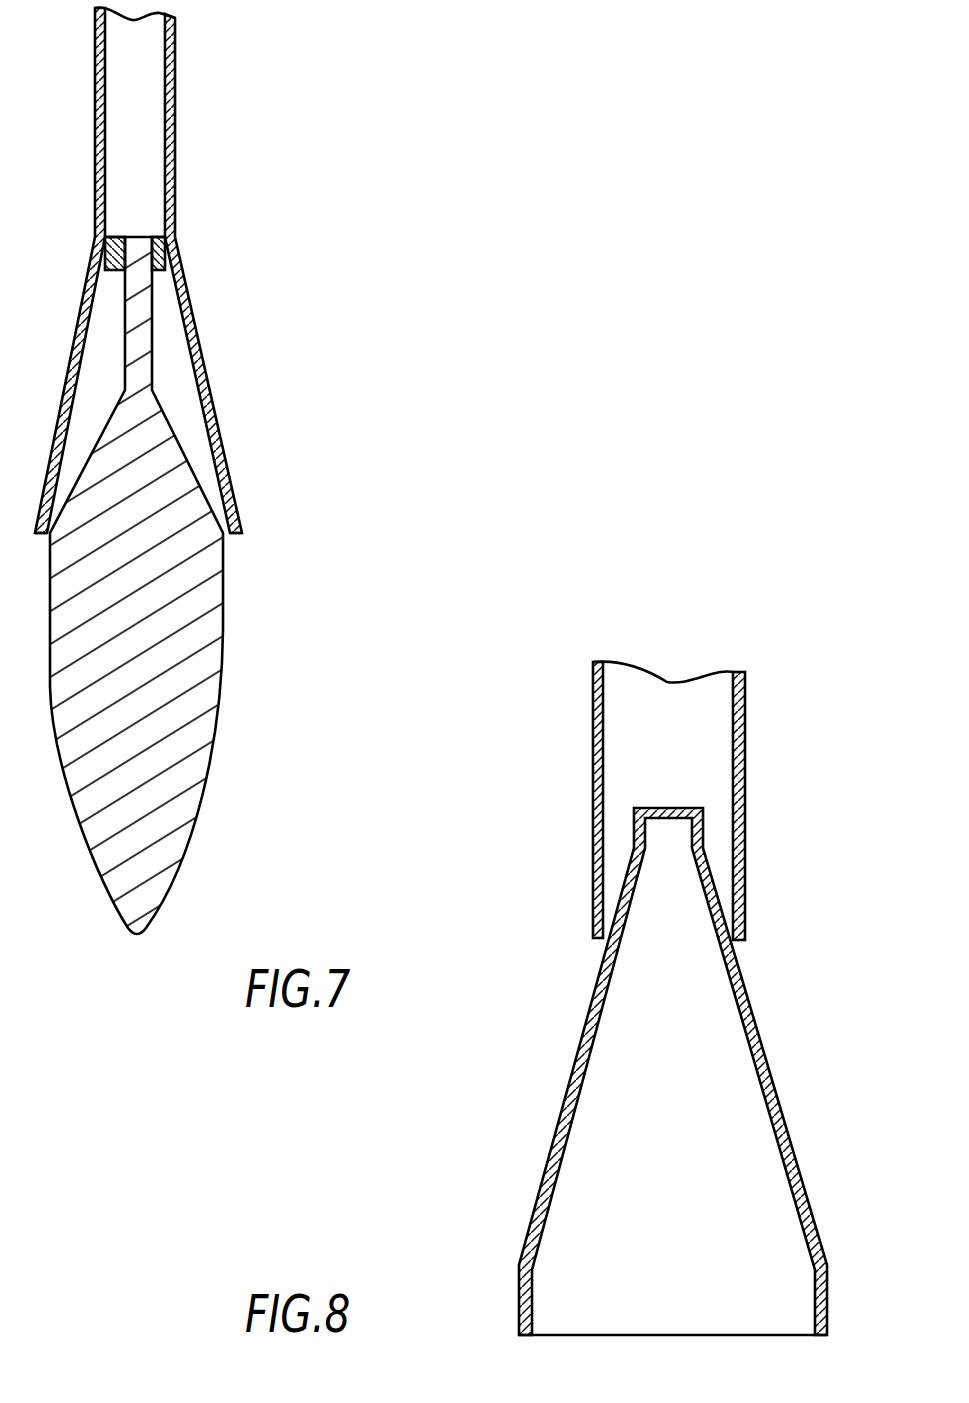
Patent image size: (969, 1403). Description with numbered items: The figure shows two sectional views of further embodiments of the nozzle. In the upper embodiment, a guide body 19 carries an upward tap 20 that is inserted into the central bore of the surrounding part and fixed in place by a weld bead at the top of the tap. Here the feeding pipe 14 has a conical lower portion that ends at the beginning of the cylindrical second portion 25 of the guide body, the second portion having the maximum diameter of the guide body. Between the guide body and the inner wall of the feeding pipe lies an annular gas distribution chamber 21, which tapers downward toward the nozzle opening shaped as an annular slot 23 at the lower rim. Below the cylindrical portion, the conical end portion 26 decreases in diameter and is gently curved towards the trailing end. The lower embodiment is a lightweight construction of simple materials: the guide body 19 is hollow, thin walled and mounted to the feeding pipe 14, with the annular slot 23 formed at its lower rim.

In FIG. 7, the feeding pipe 14 is at (195, 325).
In FIG. 8, the feeding pipe 14 is at (745, 737).
In FIG. 7, the guide body 19 is at (157, 585).
In FIG. 8, the guide body 19 is at (681, 1071).
In FIG. 7, the upward tap 20 is at (137, 248).
In FIG. 7, the annular gas distribution chamber 21 is at (183, 402).
In FIG. 7, the annular slot 23 is at (227, 537).
In FIG. 8, the annular slot 23 is at (610, 942).
In FIG. 7, the cylindrical second portion 25 is at (210, 615).
In FIG. 7, the conical end portion 26 is at (205, 797).